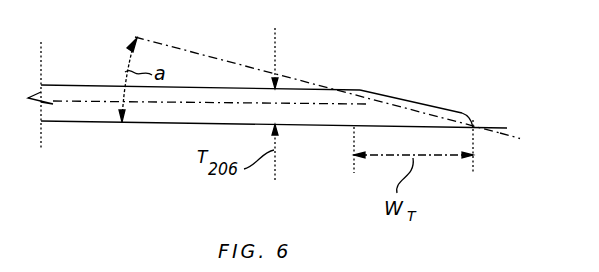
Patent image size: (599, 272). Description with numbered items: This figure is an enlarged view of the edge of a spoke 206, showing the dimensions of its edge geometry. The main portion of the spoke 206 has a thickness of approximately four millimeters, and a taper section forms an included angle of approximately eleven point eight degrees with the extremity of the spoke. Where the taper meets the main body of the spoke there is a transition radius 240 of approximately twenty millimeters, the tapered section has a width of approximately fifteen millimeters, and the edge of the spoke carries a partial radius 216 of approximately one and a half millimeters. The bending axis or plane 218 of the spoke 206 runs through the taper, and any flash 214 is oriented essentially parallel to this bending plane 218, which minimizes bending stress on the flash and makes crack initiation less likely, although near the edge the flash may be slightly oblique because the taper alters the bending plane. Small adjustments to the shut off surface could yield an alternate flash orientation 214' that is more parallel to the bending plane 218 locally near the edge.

The spoke 206 is at (77, 85).
The transition radius 240 is at (362, 90).
The bending axis or plane 218 is at (393, 108).
The partial radius 216 is at (464, 114).
The flash 214 is at (514, 116).
The alternate flash orientation 214' is at (532, 150).